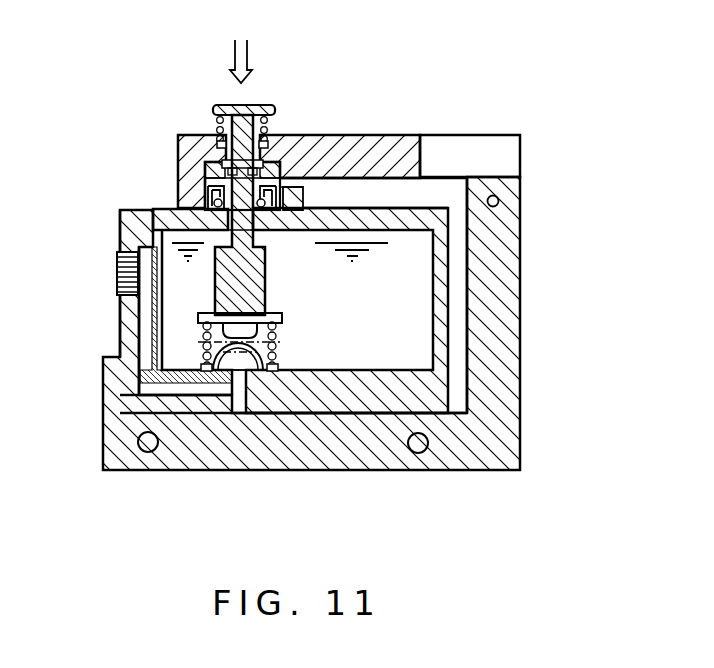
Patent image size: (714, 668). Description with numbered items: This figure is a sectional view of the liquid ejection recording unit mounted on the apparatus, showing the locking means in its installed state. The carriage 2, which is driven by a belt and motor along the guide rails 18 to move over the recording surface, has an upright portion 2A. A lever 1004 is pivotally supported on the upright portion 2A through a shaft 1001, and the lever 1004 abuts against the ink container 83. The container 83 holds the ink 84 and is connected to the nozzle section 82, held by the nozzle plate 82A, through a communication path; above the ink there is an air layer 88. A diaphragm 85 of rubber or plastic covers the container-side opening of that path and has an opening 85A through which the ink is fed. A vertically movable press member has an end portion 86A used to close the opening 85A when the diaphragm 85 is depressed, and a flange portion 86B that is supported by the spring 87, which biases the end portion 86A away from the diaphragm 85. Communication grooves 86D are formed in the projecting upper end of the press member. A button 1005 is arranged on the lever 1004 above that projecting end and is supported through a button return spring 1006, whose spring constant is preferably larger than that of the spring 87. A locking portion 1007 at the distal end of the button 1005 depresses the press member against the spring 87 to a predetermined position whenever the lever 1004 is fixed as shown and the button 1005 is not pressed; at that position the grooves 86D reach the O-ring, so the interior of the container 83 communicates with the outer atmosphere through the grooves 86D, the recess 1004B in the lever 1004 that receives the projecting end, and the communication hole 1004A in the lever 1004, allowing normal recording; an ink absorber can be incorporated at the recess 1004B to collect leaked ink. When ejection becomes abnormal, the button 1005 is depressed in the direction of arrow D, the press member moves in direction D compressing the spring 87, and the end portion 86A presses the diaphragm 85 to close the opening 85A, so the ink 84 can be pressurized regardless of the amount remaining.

The carriage 2 is at (366, 472).
The upright portion 2A is at (520, 280).
The guide rails 18 is at (147, 453).
The nozzle section 82 is at (117, 272).
The nozzle plate 82A is at (120, 317).
The ink container 83 is at (447, 373).
The ink 84 is at (416, 326).
The diaphragm 85 is at (249, 366).
The opening 85A is at (237, 348).
The end portion 86A is at (265, 293).
The flange portion 86B is at (273, 320).
The communication grooves 86D is at (277, 165).
The spring 87 is at (280, 360).
The air layer 88 is at (395, 238).
The shaft 1001 is at (499, 201).
The lever 1004 is at (372, 134).
The communication hole 1004A is at (305, 172).
The recess 1004B is at (310, 193).
The button 1005 is at (228, 107).
The button return spring 1006 is at (217, 121).
The locking portion 1007 is at (217, 139).
The arrow D is at (250, 47).